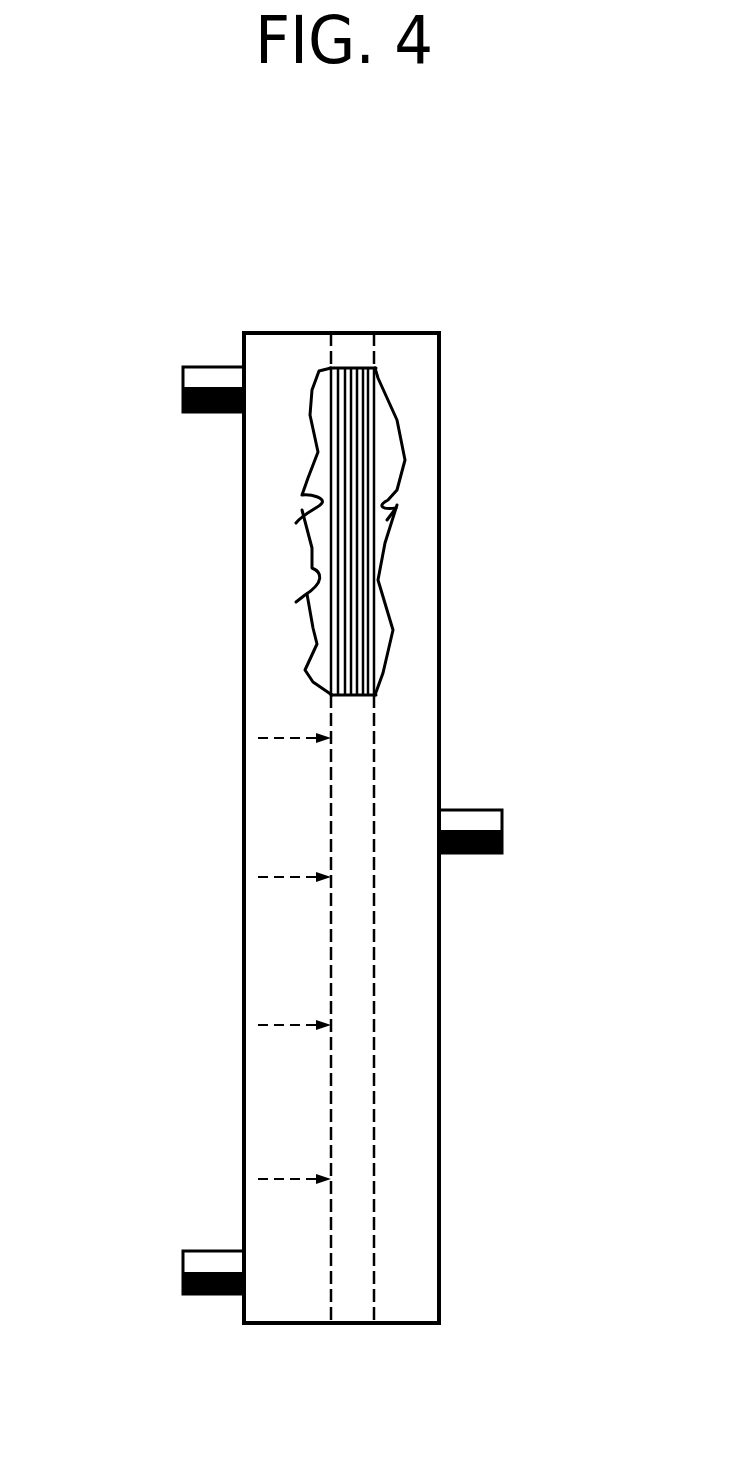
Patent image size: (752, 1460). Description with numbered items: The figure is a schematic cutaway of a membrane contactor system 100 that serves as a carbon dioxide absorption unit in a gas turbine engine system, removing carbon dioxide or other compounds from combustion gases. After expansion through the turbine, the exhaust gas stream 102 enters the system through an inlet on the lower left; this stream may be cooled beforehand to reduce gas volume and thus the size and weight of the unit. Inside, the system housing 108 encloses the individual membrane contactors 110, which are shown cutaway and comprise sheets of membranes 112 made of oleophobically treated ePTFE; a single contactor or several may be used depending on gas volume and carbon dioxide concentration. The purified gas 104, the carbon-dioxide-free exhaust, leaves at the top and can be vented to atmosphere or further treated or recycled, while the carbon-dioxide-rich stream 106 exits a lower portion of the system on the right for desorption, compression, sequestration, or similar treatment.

The membrane contactor system 100 is at (221, 229).
The exhaust gas stream 102 is at (170, 1272).
The purified gas 104 is at (183, 388).
The CO2-rich stream 106 is at (525, 830).
The system housing 108 is at (416, 1035).
The membrane contactors 110 is at (318, 622).
The sheets of membranes 112 is at (355, 440).